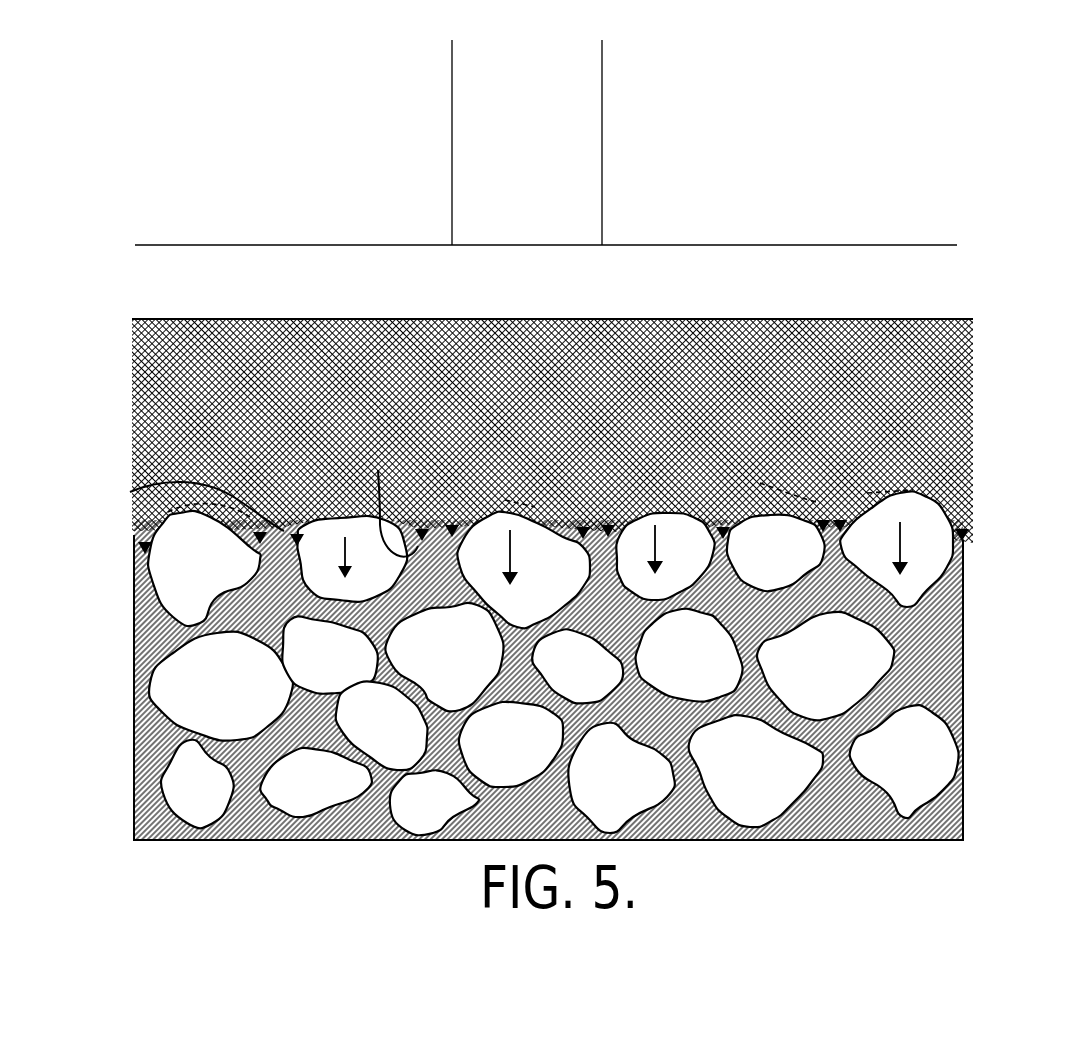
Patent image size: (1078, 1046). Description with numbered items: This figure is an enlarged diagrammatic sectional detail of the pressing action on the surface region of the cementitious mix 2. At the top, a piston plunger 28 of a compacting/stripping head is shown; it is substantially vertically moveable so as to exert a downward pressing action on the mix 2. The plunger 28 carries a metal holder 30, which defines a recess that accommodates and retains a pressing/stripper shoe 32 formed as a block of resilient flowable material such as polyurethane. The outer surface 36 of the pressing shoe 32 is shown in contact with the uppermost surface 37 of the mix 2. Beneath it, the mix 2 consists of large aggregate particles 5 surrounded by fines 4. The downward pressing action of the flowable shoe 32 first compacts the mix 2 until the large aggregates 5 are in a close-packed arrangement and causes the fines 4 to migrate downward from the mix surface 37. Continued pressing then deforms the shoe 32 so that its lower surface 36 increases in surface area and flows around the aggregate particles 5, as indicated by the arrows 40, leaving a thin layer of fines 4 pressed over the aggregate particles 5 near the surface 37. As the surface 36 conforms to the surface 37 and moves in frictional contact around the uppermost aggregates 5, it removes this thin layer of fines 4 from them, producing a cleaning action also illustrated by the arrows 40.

The mix 2 is at (556, 508).
The fines 4 is at (287, 630).
The aggregate particles 5 is at (210, 586).
The piston plunger 28 is at (577, 101).
The metal holder 30 is at (757, 268).
The pressing/stripper shoe 32 is at (928, 378).
The outer surface of the pressing shoe 36 is at (378, 470).
The uppermost surface of the mix 37 is at (131, 492).
The arrows 40 is at (137, 553).